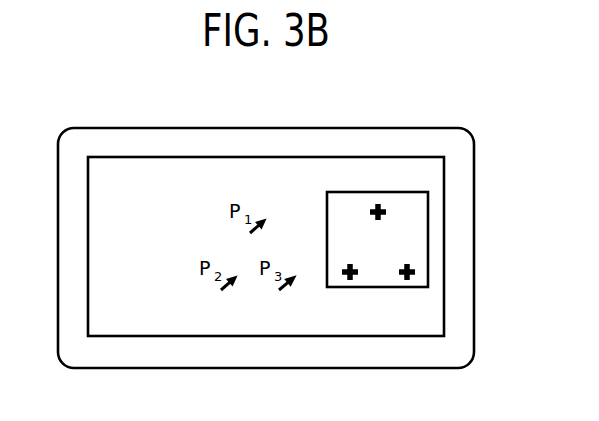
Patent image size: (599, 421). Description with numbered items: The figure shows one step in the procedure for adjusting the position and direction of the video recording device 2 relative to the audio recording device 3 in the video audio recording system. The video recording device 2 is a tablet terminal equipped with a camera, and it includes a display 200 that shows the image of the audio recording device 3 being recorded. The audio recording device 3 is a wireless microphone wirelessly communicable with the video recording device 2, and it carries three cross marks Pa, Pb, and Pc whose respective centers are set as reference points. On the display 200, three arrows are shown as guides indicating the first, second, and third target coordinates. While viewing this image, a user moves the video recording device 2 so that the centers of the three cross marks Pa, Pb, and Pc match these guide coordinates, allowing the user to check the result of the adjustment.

The video recording device 2 is at (263, 128).
The display 200 is at (373, 157).
The audio recording device 3 is at (373, 192).